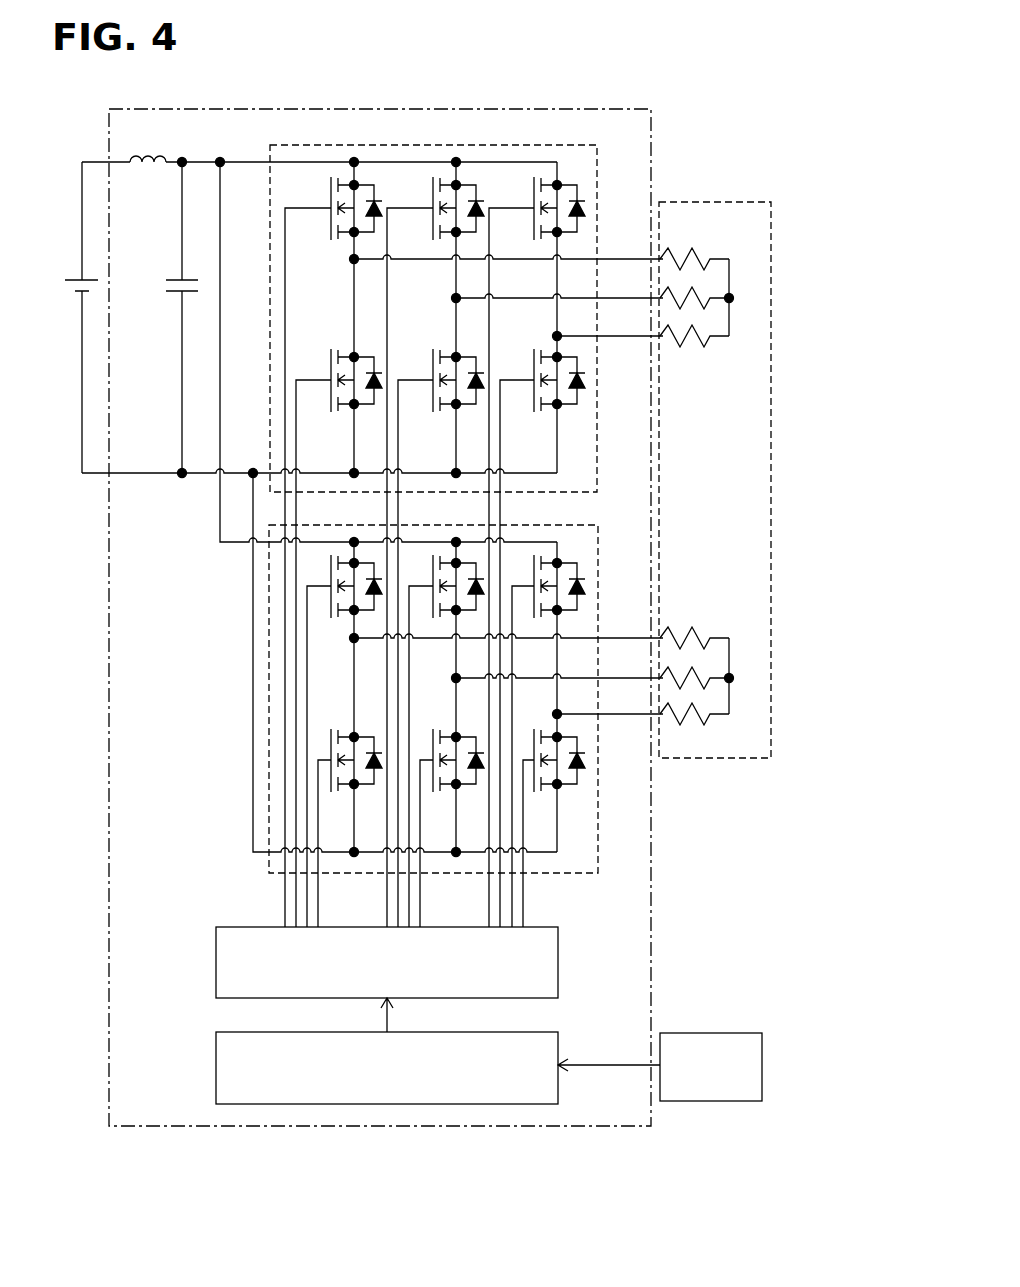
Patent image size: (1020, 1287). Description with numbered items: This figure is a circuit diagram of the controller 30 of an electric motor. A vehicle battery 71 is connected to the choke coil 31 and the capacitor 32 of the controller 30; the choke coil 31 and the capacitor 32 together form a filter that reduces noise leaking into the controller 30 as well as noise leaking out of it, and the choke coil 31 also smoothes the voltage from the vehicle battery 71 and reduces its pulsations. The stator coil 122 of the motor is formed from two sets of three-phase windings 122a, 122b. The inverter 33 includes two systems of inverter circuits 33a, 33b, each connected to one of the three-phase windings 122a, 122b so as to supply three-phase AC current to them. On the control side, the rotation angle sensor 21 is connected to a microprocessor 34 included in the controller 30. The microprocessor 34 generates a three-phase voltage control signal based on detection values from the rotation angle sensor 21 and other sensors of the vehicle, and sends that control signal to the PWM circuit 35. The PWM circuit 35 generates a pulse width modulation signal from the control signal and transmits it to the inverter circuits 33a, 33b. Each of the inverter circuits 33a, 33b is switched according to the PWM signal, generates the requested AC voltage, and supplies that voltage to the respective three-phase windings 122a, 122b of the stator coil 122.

The rotation angle sensor 21 is at (738, 1033).
The controller 30 is at (190, 109).
The choke coil 31 is at (142, 118).
The capacitor 32 is at (149, 315).
The inverter 33 is at (372, 536).
The inverter circuit 33a is at (268, 430).
The inverter circuit 33b is at (165, 523).
The microprocessor 34 is at (216, 1063).
The PWM circuit 35 is at (216, 958).
The vehicle battery 71 is at (71, 234).
The stator coil 122 is at (715, 435).
The three-phase windings 122a is at (710, 378).
The three-phase windings 122b is at (705, 600).